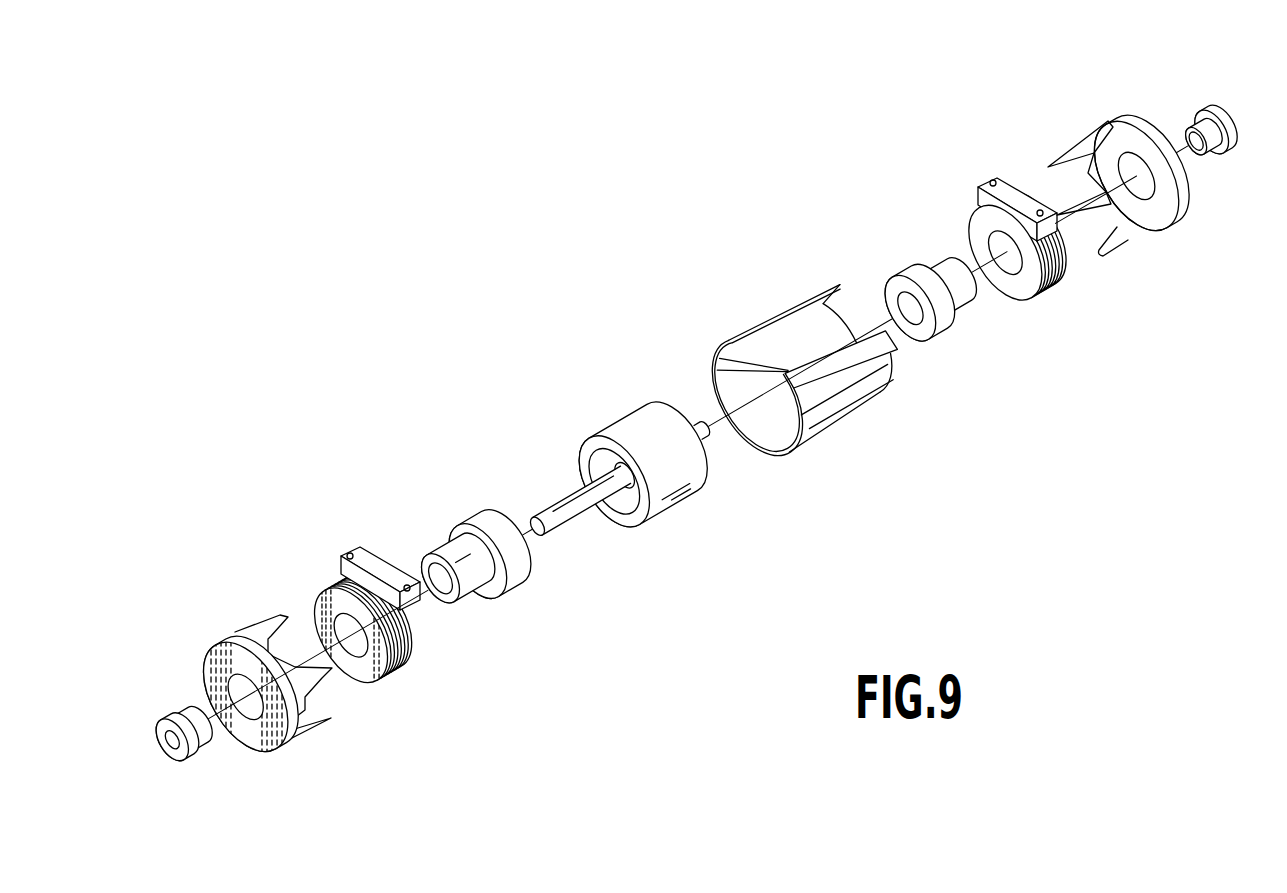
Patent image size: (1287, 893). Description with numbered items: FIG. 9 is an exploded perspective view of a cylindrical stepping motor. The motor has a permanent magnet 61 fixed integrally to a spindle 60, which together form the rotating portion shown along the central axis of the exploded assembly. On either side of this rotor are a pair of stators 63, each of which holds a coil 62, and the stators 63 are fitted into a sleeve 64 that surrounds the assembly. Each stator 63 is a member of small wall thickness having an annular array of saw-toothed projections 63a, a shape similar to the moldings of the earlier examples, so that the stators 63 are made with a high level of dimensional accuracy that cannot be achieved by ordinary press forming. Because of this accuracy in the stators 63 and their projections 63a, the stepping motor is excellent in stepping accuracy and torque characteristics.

The spindle 60 is at (565, 513).
The permanent magnet 61 is at (673, 500).
The coil 62 is at (380, 663).
The stator 63 is at (268, 742).
The saw-toothed projections 63a is at (272, 625).
The sleeve 64 is at (850, 413).